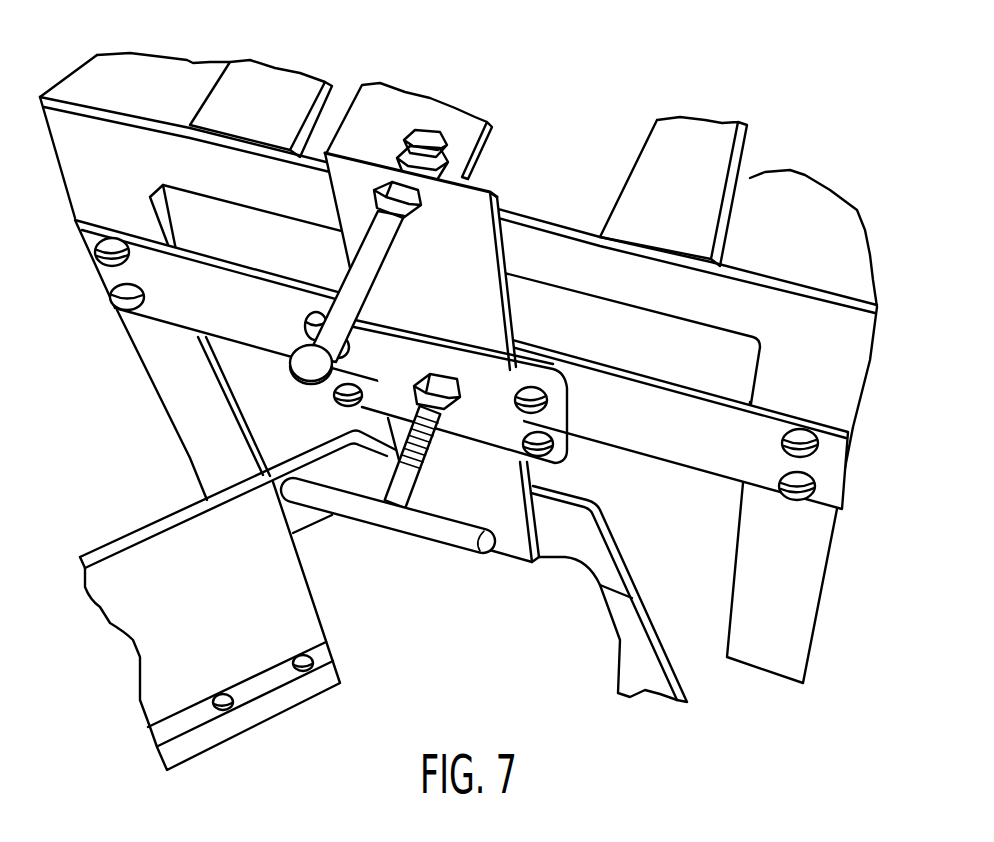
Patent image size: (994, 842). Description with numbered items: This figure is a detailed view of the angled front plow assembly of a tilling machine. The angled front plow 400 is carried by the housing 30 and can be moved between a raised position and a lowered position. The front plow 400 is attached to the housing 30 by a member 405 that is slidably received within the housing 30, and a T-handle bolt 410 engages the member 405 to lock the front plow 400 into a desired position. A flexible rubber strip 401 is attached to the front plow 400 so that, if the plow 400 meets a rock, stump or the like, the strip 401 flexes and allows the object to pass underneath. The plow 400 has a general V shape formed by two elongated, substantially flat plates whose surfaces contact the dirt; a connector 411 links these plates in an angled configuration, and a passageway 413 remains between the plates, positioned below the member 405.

The housing 30 is at (768, 218).
The angled front plow 400 is at (277, 593).
The flexible rubber strip 401 is at (313, 688).
The member 405 is at (462, 295).
The T-handle bolt 410 is at (388, 518).
The connector 411 is at (567, 524).
The passageway 413 is at (555, 588).